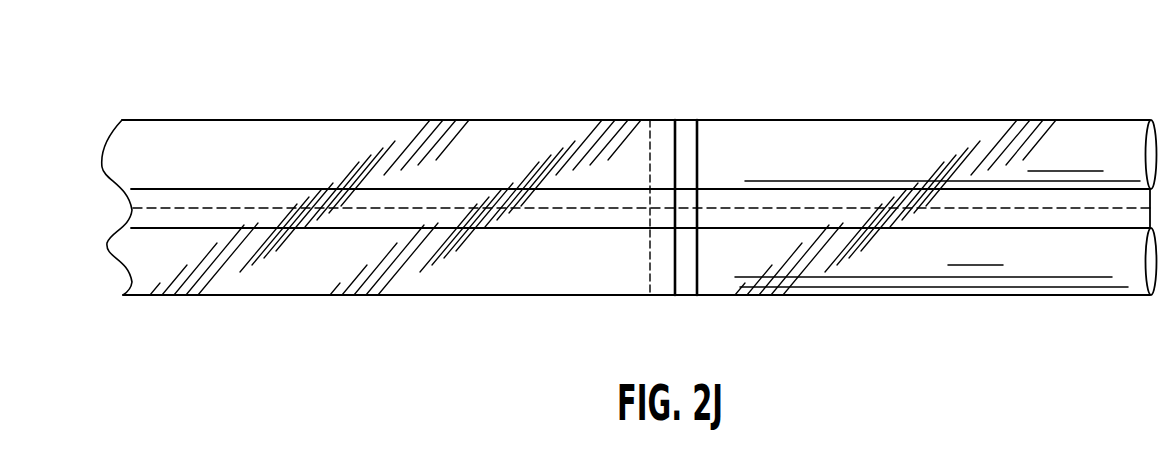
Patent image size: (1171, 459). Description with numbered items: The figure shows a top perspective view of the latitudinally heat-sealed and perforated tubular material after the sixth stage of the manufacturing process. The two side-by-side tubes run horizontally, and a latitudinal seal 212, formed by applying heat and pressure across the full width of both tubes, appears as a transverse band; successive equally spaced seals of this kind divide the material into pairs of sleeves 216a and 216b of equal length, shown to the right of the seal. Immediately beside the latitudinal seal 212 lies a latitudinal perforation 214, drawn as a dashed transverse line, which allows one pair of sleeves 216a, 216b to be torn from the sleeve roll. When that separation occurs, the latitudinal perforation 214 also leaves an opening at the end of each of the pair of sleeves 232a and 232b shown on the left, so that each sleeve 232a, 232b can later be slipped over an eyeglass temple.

The sleeve 232b is at (312, 157).
The sleeve 232a is at (323, 252).
The latitudinal perforation 214 is at (647, 152).
The latitudinal seal 212 is at (687, 128).
The sleeve 216b is at (892, 153).
The sleeve 216a is at (925, 278).